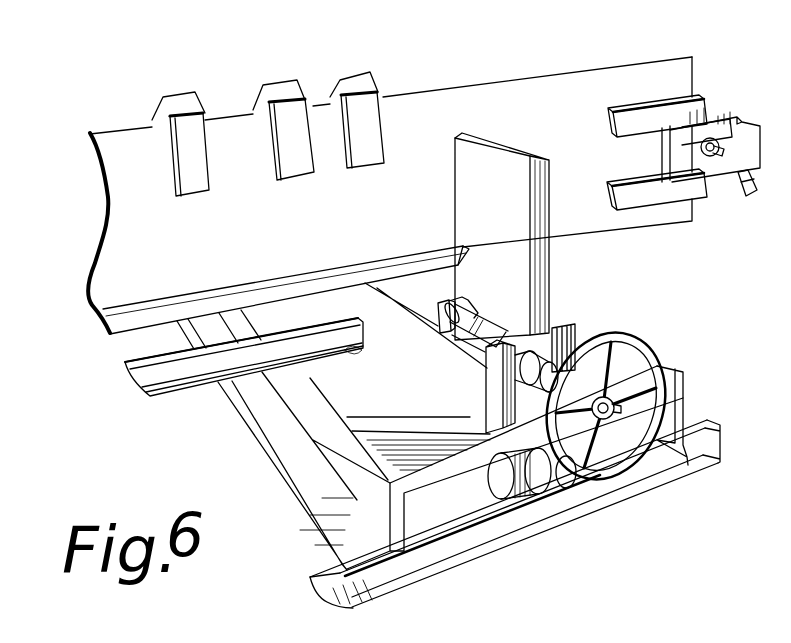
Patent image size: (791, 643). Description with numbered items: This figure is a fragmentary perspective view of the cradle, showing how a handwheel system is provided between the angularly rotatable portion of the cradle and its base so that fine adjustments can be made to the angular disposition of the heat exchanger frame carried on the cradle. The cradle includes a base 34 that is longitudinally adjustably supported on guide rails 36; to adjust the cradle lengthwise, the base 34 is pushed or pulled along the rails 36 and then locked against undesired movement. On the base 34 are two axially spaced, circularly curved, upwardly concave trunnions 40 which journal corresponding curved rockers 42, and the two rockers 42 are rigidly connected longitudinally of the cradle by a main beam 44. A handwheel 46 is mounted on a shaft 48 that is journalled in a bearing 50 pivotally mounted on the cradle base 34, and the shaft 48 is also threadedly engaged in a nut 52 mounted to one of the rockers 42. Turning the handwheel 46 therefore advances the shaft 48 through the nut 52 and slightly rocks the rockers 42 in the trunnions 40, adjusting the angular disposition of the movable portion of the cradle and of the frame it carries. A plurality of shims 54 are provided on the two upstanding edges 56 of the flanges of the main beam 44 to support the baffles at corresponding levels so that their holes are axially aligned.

The base 34 is at (180, 400).
The guide rails 36 is at (470, 543).
The trunnions 40 is at (468, 346).
The rockers 42 is at (512, 250).
The main beam 44 is at (458, 90).
The handwheel 46 is at (657, 351).
The shaft 48 is at (572, 355).
The bearing 50 is at (527, 347).
The nut 52 is at (454, 302).
The shims 54 is at (347, 75).
The upstanding edges 56 is at (548, 75).